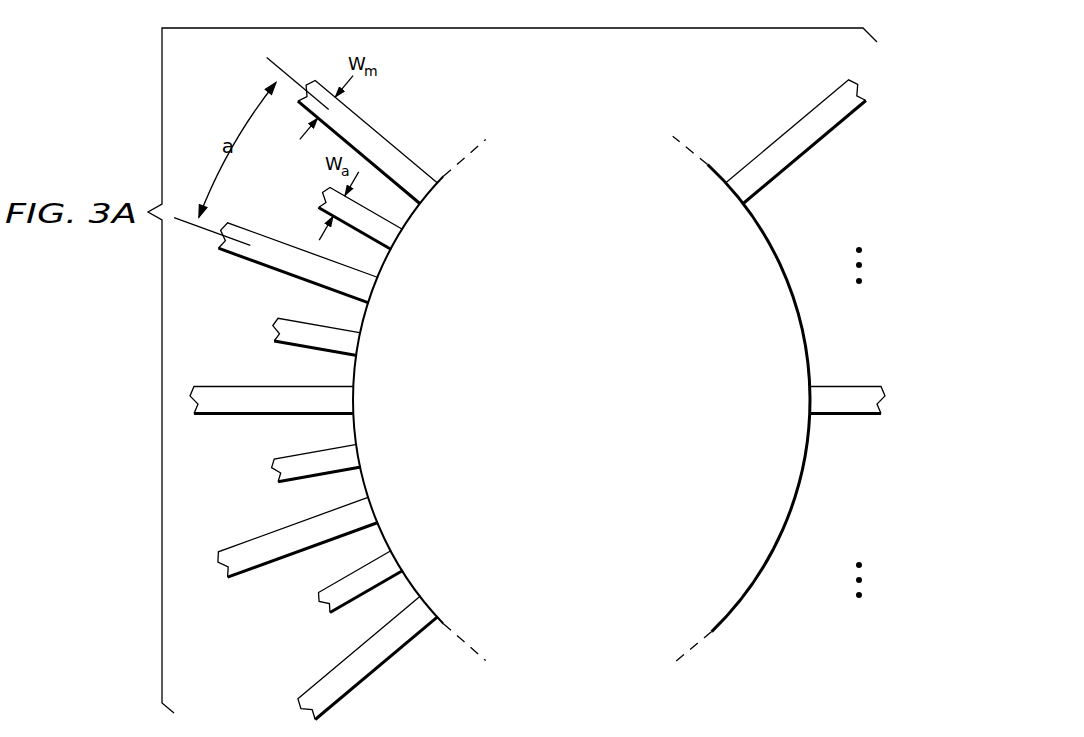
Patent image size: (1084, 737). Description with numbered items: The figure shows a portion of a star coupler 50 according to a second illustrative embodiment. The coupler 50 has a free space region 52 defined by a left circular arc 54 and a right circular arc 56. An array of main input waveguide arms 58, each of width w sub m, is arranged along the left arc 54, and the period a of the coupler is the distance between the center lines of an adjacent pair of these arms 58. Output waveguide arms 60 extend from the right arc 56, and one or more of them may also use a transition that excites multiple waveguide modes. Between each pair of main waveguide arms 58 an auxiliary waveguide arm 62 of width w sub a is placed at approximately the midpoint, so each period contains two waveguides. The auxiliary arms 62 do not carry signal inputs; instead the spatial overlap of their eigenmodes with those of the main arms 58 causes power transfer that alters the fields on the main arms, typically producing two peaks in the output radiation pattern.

The star coupler 50 is at (705, 125).
The free space region 52 is at (590, 406).
The left circular arc 54 is at (443, 177).
The right circular arc 56 is at (785, 273).
The input waveguide arm 58 is at (373, 127).
The output waveguide arm 60 is at (788, 165).
The auxiliary waveguide arm 62 is at (327, 190).